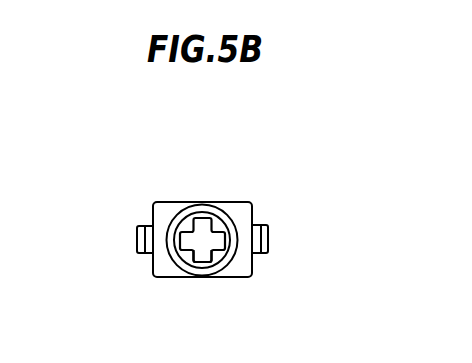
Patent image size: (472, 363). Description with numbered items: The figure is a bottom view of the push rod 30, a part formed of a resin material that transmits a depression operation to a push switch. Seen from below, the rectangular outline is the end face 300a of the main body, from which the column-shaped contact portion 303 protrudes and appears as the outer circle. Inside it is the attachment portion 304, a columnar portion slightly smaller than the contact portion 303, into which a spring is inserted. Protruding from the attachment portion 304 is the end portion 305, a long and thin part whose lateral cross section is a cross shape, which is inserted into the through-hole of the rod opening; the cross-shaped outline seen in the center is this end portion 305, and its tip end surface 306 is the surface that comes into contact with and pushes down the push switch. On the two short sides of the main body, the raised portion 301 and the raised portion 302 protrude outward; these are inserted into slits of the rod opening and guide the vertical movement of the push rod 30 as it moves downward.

The push rod 30 is at (291, 145).
The end face 300a is at (240, 213).
The raised portion 301 is at (262, 246).
The raised portion 302 is at (138, 239).
The contact portion 303 is at (213, 206).
The end portion 305 is at (187, 223).
The attachment portion 304 is at (214, 252).
The tip end surface 306 is at (201, 257).